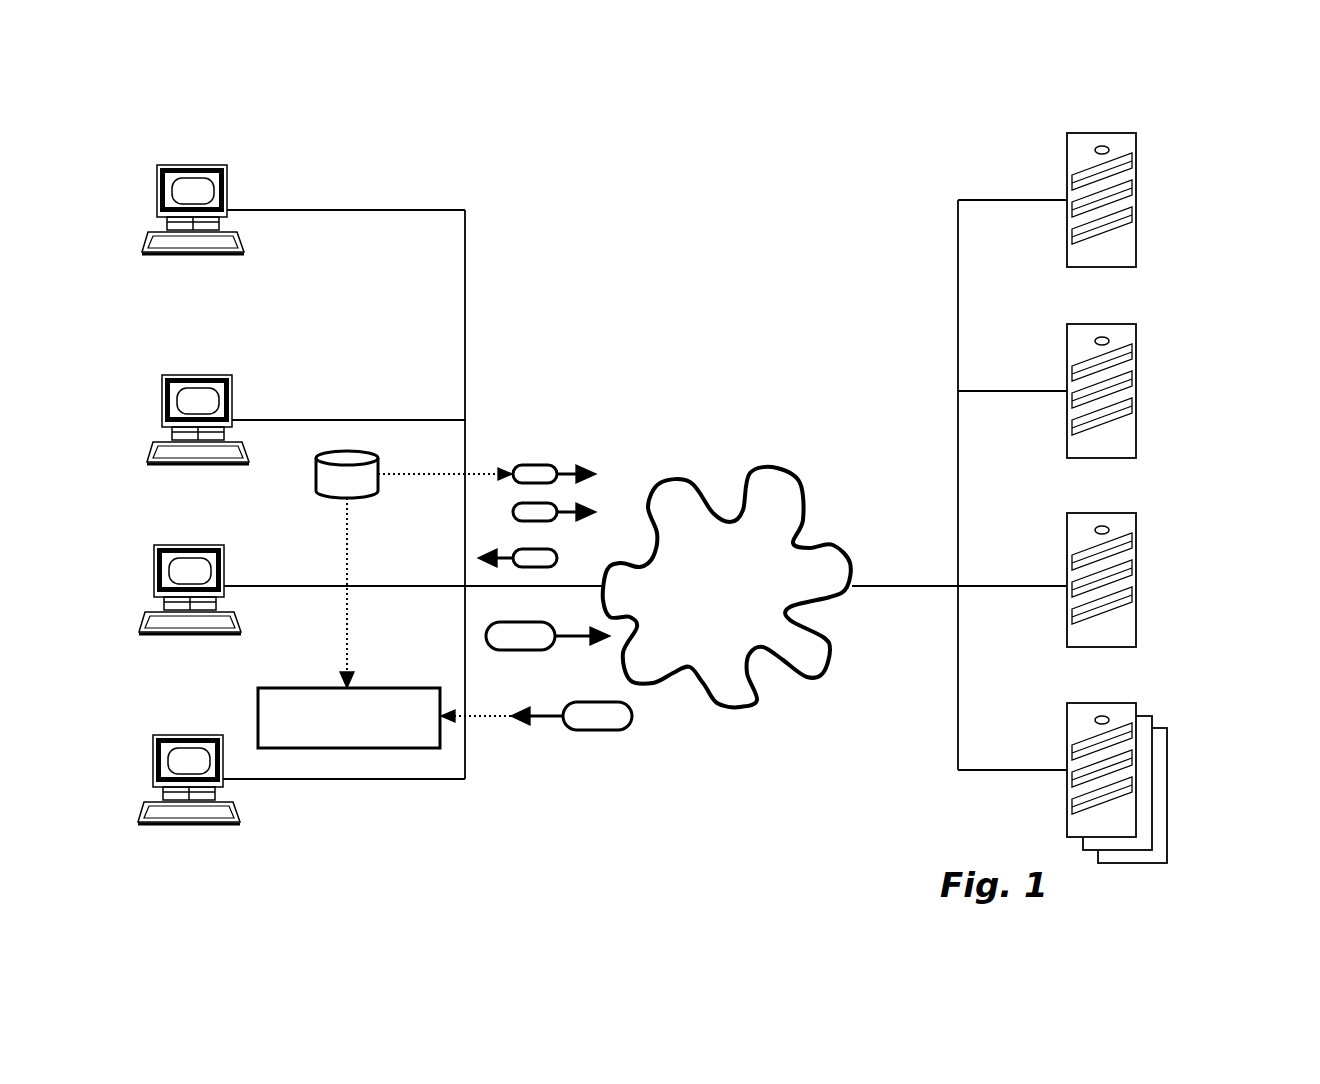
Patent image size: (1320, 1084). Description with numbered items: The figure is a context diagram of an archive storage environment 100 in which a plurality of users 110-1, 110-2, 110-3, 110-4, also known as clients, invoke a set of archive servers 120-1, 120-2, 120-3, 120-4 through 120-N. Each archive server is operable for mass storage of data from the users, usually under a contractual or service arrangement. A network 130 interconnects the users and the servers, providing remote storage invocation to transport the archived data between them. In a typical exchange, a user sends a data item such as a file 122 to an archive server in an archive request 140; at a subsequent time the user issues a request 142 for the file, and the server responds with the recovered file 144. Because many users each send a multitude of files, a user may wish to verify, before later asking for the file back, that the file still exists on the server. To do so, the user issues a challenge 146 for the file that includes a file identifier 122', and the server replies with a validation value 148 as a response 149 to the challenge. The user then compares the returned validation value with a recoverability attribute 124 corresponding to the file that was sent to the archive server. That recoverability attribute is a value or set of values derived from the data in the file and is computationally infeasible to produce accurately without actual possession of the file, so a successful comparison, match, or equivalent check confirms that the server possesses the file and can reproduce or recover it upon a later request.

The archive storage environment 100 is at (455, 835).
The user 110-1 is at (230, 177).
The user 110-2 is at (235, 387).
The user 110-3 is at (188, 635).
The user 110-4 is at (188, 825).
The archive server 120-1 is at (1136, 165).
The archive server 120-2 is at (1136, 354).
The archive server 120-3 is at (1136, 552).
The archive server 120-4 is at (1137, 703).
The archive server 120-N is at (1167, 828).
The file 122 is at (367, 569).
The file identifier 122' is at (520, 636).
The recoverability attribute 124 is at (303, 687).
The network 130 is at (806, 514).
The archive request 140 is at (543, 465).
The request 142 is at (513, 514).
The recovered file 144 is at (557, 556).
The challenge 146 is at (545, 650).
The validation value 148 is at (597, 716).
The response 149 is at (595, 730).